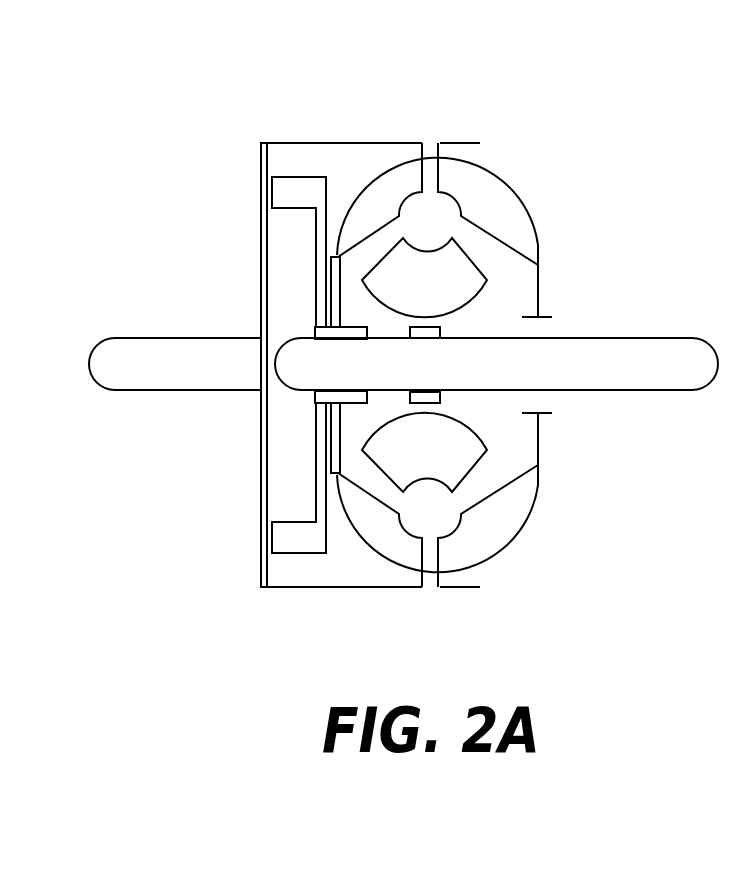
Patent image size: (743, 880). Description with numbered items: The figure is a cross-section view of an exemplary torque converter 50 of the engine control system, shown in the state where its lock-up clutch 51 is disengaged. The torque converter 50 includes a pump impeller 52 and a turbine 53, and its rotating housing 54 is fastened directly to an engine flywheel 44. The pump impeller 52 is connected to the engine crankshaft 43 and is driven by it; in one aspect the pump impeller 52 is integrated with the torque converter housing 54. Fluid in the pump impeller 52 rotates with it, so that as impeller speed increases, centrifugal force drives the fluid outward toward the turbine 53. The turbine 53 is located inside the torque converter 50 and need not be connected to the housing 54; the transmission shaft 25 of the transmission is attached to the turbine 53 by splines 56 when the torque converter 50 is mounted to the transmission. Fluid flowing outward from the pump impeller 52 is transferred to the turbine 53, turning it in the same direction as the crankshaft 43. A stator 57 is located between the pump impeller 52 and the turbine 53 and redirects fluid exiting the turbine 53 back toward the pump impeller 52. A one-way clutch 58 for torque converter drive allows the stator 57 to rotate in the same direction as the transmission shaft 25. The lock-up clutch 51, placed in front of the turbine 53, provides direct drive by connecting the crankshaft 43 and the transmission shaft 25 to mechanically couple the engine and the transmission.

The torque converter 50 is at (628, 180).
The transmission shaft 25 is at (645, 392).
The crankshaft 43 is at (122, 391).
The engine flywheel 44 is at (260, 237).
The lock-up clutch 51 is at (308, 192).
The pump impeller 52 is at (517, 223).
The turbine 53 is at (377, 183).
The rotating housing 54 is at (432, 140).
The splines 56 is at (332, 302).
The stator 57 is at (463, 285).
The one-way clutch 58 is at (433, 333).